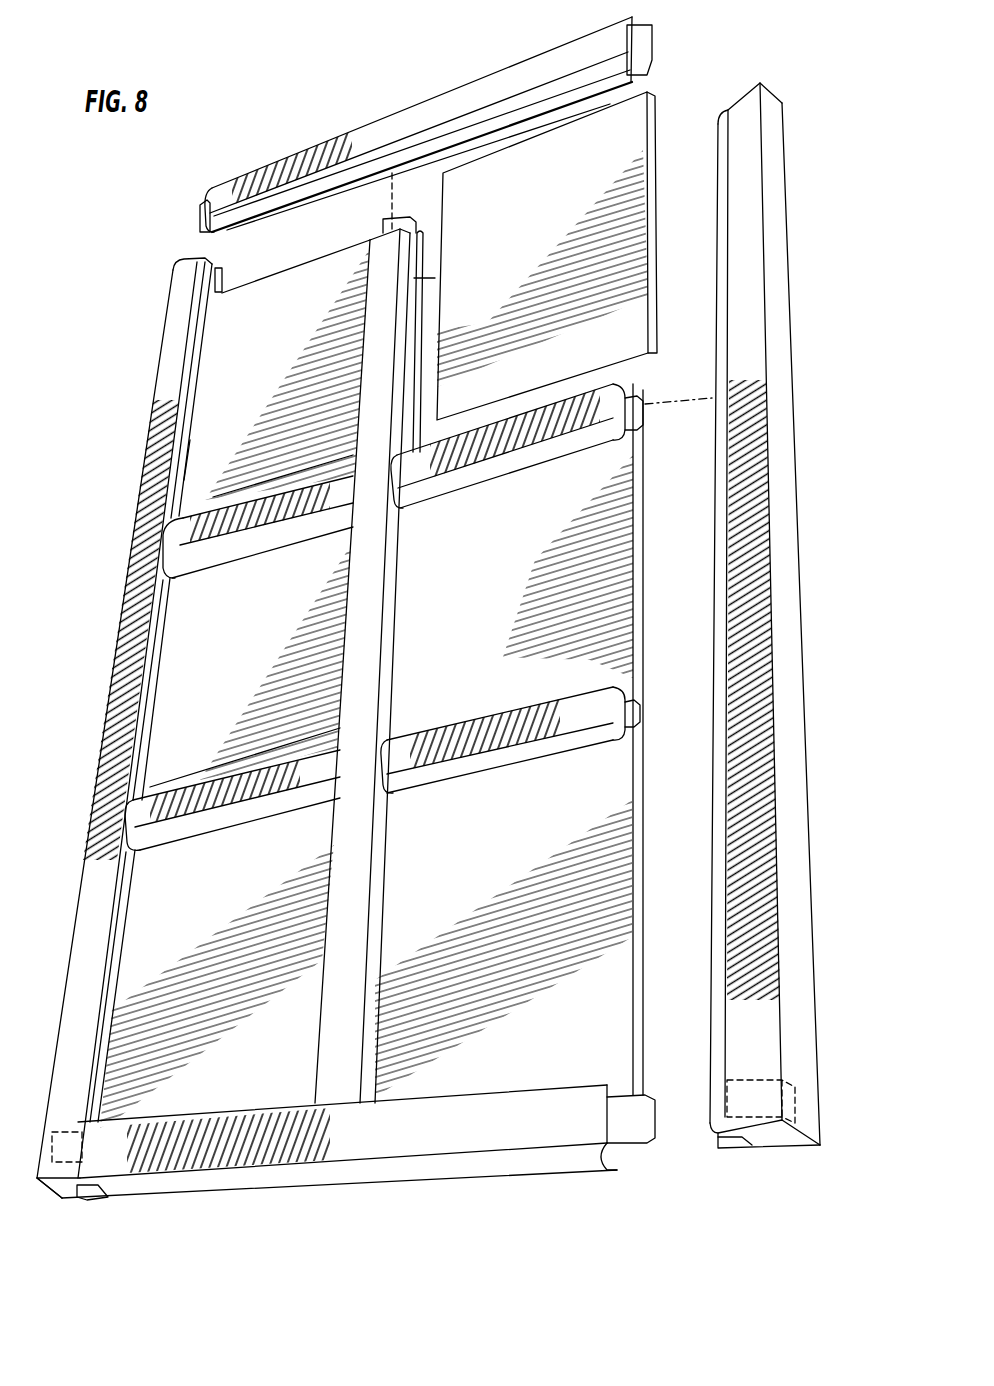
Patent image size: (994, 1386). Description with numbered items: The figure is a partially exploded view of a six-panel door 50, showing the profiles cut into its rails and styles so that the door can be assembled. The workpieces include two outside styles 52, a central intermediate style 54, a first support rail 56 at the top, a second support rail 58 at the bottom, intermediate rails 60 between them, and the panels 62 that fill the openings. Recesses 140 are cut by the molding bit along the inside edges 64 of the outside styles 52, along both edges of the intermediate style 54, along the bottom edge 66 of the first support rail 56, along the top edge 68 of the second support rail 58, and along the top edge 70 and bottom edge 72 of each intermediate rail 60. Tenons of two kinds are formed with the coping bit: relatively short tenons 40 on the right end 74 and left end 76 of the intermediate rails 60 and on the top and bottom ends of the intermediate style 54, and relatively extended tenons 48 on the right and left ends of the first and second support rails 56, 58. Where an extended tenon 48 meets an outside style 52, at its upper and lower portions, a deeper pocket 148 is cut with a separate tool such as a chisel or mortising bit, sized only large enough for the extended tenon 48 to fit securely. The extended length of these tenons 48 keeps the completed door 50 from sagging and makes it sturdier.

The tenon 40 is at (385, 218).
The extended tenon 48 is at (203, 226).
The panel door 50 is at (820, 56).
The outside style 52 is at (783, 280).
The intermediate style 54 is at (397, 655).
The first support rail 56 is at (342, 137).
The second support rail 58 is at (322, 1173).
The intermediate rail 60 is at (208, 580).
The panel 62 is at (230, 350).
The inside edge 64 is at (160, 468).
The bottom edge 66 is at (472, 130).
The top edge 68 is at (477, 1093).
The top edge 70 is at (592, 657).
The bottom edge 72 is at (172, 837).
The right end 74 is at (627, 383).
The left end 76 is at (178, 510).
The recess 140 is at (208, 260).
The pocket 148 is at (66, 1148).